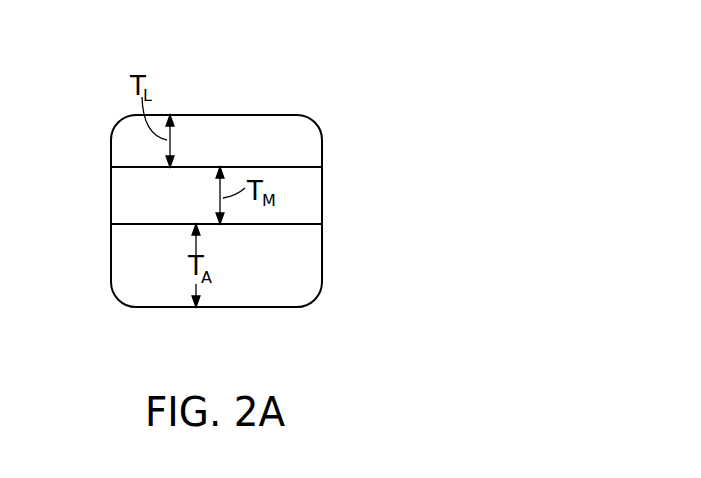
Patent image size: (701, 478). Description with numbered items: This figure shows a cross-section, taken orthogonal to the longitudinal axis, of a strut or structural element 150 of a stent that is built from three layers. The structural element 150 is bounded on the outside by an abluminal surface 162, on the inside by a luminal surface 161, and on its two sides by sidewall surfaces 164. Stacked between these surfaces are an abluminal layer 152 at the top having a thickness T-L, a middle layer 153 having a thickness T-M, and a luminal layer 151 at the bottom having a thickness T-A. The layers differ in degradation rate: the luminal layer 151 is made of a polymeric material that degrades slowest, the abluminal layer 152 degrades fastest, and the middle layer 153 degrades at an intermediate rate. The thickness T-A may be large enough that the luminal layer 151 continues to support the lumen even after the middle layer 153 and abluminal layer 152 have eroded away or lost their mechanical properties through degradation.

The structural element 150 is at (286, 46).
The luminal layer 151 is at (250, 288).
The abluminal layer 152 is at (265, 133).
The middle layer 153 is at (132, 194).
The luminal surface 161 is at (160, 307).
The abluminal surface 162 is at (188, 115).
The sidewall surfaces 164 is at (110, 243).